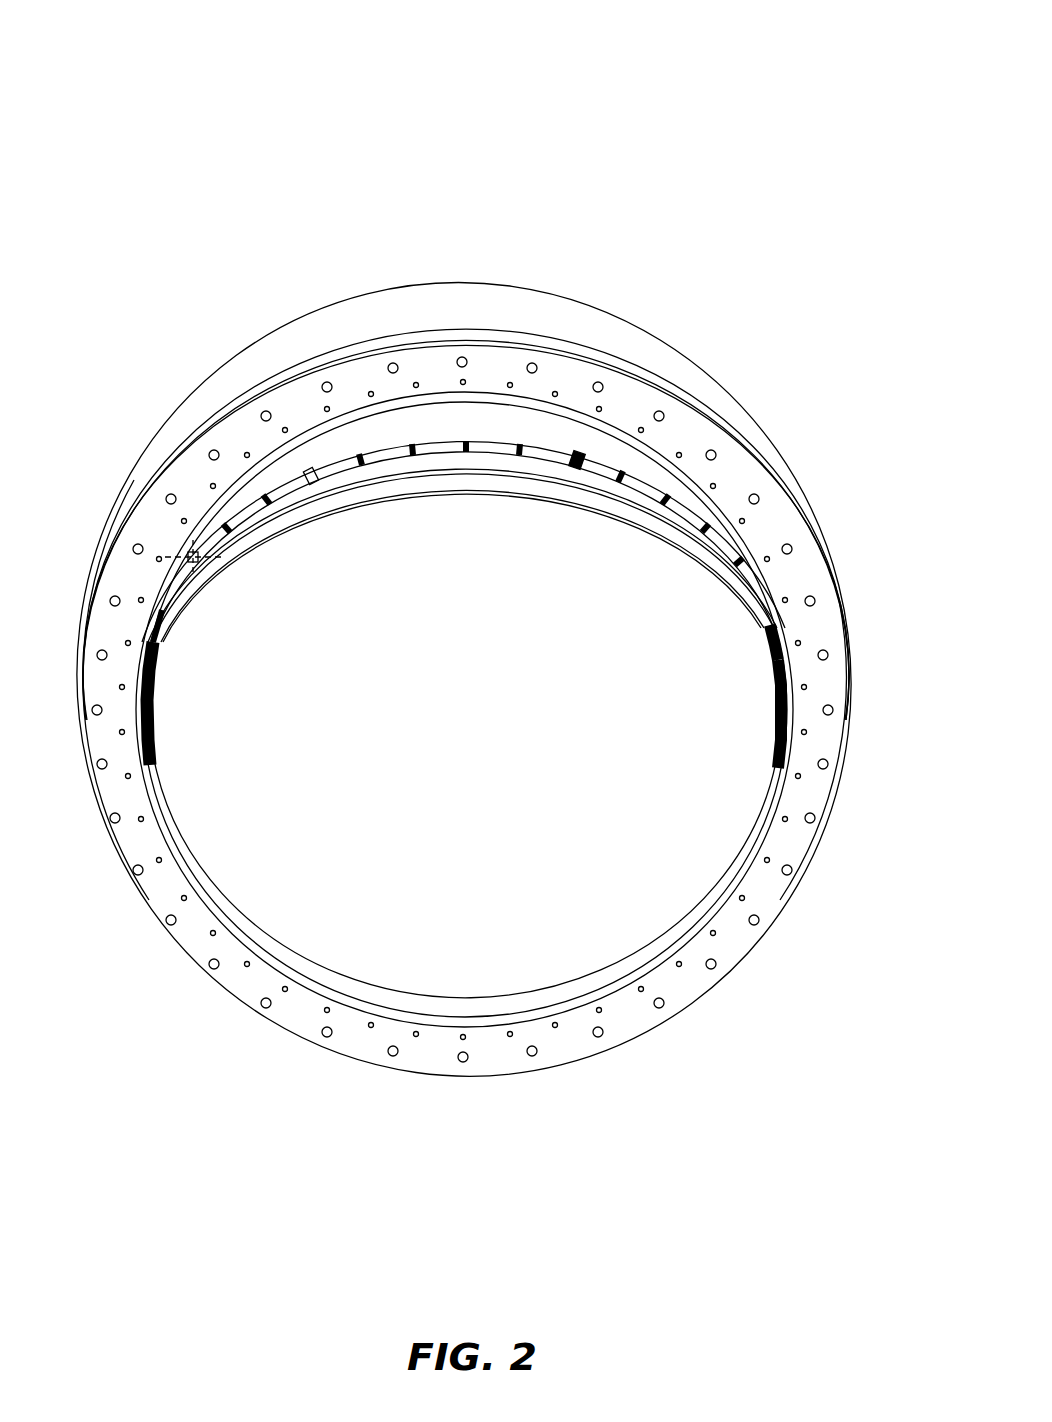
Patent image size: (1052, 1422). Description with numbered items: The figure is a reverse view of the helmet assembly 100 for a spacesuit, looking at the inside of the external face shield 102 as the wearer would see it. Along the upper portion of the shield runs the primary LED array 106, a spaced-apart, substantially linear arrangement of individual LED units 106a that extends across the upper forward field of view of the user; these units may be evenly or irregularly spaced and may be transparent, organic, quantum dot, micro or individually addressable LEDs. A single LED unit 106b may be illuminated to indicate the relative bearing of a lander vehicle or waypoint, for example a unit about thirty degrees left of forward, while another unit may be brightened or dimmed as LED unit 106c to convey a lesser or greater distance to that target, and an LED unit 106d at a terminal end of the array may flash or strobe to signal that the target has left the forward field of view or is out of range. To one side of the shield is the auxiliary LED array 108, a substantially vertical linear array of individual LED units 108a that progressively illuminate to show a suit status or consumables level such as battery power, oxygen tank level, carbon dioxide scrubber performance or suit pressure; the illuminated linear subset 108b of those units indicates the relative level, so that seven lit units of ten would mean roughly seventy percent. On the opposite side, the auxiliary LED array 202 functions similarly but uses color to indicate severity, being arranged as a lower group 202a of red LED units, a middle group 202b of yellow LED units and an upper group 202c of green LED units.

The helmet assembly 100 is at (146, 76).
The external face shield 102 is at (737, 430).
The primary LED array 106 is at (437, 447).
The LED units 106a is at (466, 443).
The illuminated LED unit 106b is at (307, 473).
The brightened or dimmed LED unit 106c is at (580, 458).
The terminal end LED unit 106d is at (190, 553).
The auxiliary LED array 108 is at (150, 660).
The individual LED units 108a is at (157, 648).
The linear subset of LED units 108b is at (172, 662).
The auxiliary LED array 202 is at (800, 676).
The lower group of red LED units 202a is at (752, 710).
The middle group of yellow LED units 202b is at (752, 662).
The upper group of green LED units 202c is at (752, 658).